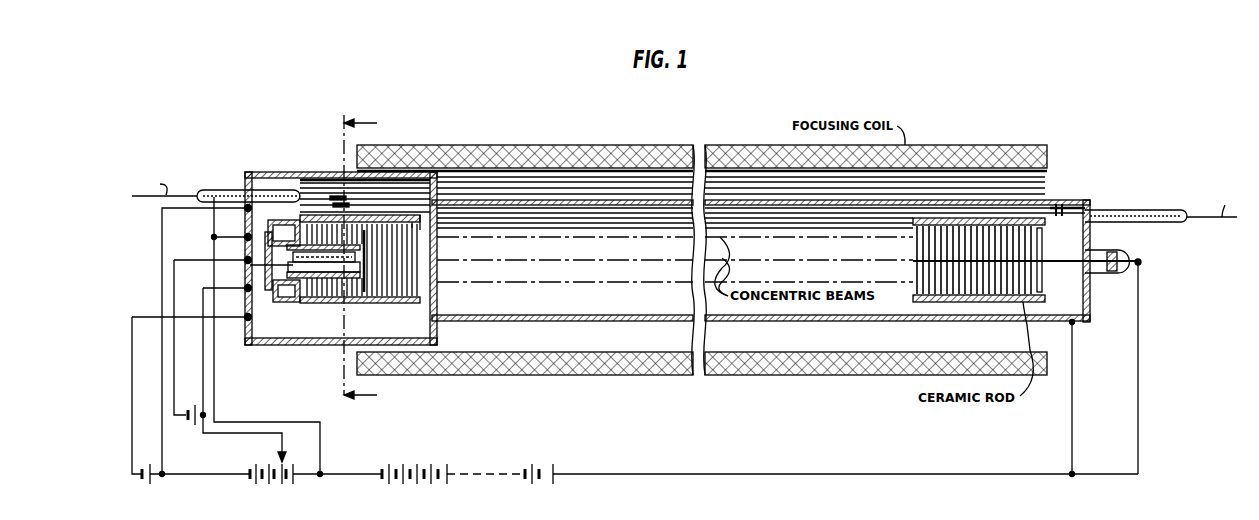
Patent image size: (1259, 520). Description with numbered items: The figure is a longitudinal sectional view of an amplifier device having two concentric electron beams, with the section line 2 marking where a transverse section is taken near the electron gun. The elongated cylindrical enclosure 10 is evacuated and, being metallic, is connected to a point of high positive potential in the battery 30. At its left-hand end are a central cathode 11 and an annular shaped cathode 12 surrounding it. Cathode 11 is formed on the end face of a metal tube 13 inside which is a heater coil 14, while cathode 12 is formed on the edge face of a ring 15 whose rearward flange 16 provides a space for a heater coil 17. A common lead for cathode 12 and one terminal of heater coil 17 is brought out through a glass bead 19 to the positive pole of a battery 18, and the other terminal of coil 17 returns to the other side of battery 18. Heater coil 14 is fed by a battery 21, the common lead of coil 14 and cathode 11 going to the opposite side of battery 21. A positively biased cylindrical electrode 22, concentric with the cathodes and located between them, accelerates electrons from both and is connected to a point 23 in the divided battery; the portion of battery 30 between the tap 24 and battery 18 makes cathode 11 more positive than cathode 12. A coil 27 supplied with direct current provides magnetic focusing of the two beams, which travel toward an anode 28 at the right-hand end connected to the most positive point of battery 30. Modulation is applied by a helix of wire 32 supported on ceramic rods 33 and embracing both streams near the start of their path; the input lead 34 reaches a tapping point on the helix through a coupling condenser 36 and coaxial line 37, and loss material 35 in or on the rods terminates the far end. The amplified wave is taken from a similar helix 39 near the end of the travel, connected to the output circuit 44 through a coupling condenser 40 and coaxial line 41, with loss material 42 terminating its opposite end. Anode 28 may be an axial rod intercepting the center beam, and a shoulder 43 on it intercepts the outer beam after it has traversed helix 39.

The section line 2- 2 is at (361, 264).
The elongated cylindrical enclosure 10 is at (592, 320).
The central cathode 11 is at (380, 298).
The annular shaped cathode 12 is at (308, 214).
The metal tube 13 is at (350, 298).
The heater coil 14 is at (323, 298).
The ring 15 is at (322, 306).
The rearward flange 16 is at (290, 306).
The heater coil 17 is at (273, 306).
The battery 18 is at (141, 478).
The glass bead 19 is at (248, 212).
The battery 21 is at (194, 425).
The cylindrical electrode 22 is at (288, 268).
The point 23 is at (320, 478).
The tap 24 is at (290, 444).
The coil 27 is at (672, 145).
The anode 28 is at (1000, 302).
The battery 30 is at (287, 478).
The helix of wire 32 is at (420, 290).
The ceramic rods 33 is at (348, 208).
The input lead 34 is at (143, 198).
The loss material 35 is at (420, 224).
The coupling condenser 36 is at (332, 213).
The coaxial line 37 is at (230, 189).
The helix 39 is at (913, 302).
The coupling condenser 40 is at (1068, 200).
The coaxial line 41 is at (1152, 180).
The loss material 42 is at (950, 302).
The shoulder 43 is at (1042, 270).
The output circuit 44 is at (1228, 220).